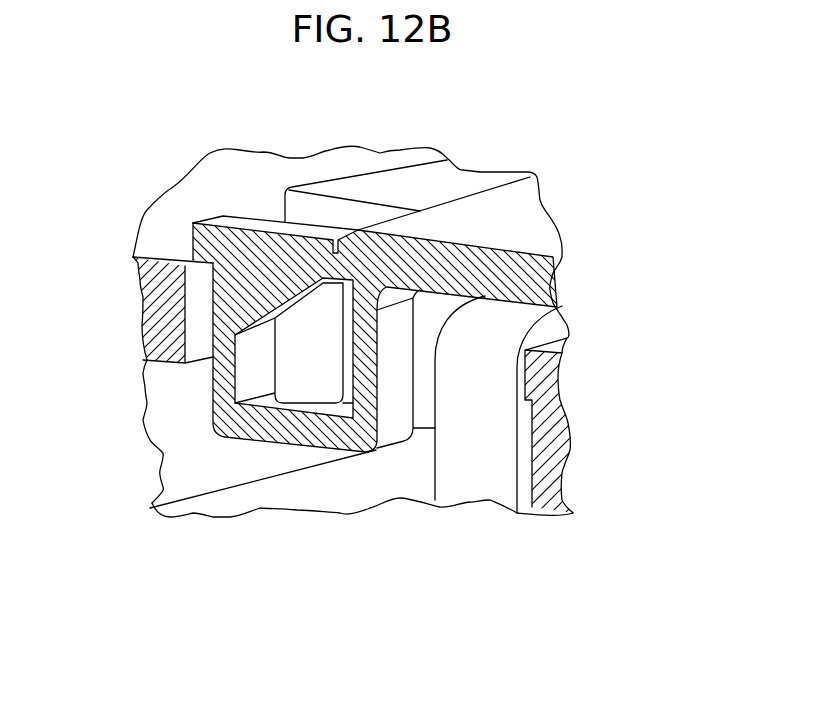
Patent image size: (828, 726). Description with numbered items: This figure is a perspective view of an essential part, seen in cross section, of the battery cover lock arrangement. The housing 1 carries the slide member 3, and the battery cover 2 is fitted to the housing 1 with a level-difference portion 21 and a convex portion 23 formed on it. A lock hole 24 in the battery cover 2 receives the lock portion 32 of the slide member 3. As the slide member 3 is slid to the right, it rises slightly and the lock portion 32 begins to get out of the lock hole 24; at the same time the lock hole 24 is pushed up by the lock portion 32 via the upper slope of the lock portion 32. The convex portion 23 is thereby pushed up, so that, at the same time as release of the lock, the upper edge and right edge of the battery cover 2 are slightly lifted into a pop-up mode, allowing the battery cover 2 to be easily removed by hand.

The housing 1 is at (254, 172).
The battery cover 2 is at (525, 213).
The slide member 3 is at (410, 170).
The level-difference portion 21 is at (488, 192).
The convex portion 23 is at (260, 440).
The lock hole 24 is at (250, 372).
The lock portion 32 is at (320, 406).